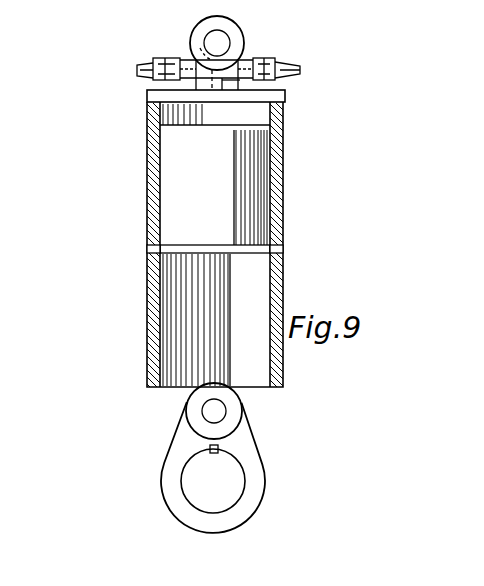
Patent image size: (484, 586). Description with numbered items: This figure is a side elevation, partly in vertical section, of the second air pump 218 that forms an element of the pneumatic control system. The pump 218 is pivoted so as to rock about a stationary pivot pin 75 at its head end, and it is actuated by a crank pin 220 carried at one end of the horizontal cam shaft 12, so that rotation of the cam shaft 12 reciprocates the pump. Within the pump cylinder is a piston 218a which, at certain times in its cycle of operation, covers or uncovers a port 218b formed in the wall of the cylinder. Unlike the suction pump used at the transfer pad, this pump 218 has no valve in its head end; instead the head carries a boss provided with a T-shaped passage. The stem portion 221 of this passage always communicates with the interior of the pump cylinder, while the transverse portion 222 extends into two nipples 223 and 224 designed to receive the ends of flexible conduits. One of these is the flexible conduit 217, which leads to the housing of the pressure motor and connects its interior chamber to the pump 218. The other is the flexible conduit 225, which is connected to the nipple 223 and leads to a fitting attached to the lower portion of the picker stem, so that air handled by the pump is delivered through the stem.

The stationary pivot pin 75 is at (222, 42).
The transverse portion of the T-shaped passage 222 is at (193, 40).
The nipple 223 is at (182, 60).
The nipple 224 is at (247, 61).
The flexible conduit 225 is at (290, 68).
The flexible conduit 217 is at (148, 78).
The stem portion of the T-shaped passage 221 is at (222, 82).
The second air pump 218 is at (307, 190).
The piston 218a is at (260, 175).
The port 218b is at (284, 248).
The crank pin 220 is at (222, 412).
The cam shaft 12 is at (235, 478).